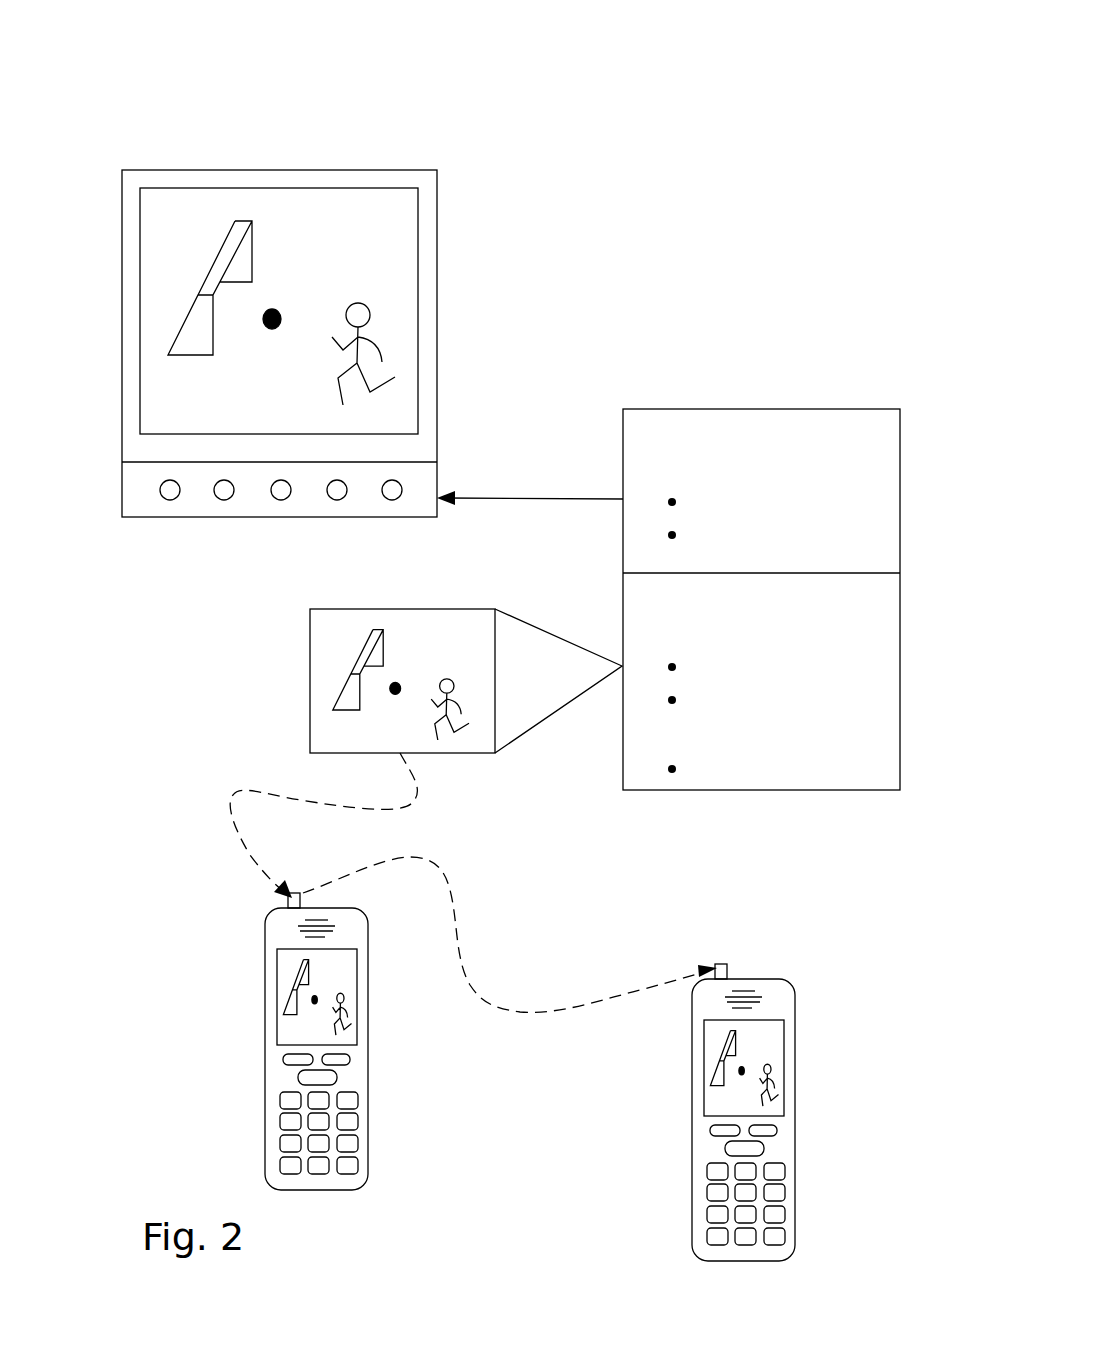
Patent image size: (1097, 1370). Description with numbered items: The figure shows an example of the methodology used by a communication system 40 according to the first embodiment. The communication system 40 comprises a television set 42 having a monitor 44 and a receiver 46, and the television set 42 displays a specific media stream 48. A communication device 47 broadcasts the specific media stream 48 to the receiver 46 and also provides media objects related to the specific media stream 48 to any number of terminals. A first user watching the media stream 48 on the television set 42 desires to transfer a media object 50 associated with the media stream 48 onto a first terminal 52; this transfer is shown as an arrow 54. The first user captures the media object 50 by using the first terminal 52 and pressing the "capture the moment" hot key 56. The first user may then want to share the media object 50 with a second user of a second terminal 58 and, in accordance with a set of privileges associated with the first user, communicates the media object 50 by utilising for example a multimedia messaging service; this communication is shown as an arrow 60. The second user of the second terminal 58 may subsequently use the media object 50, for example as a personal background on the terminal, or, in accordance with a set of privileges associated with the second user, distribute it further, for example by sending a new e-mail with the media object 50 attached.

The communication system 40 is at (678, 152).
The television set 42 is at (216, 152).
The monitor 44 is at (437, 335).
The receiver 46 is at (198, 497).
The communication device 47 is at (770, 408).
The specific media stream 48 is at (307, 225).
The media object 50 is at (310, 680).
The first terminal 52 is at (273, 1027).
The arrow 54 is at (235, 825).
The hot key 56 is at (353, 1108).
The second terminal 58 is at (792, 1099).
The arrow 60 is at (493, 1007).